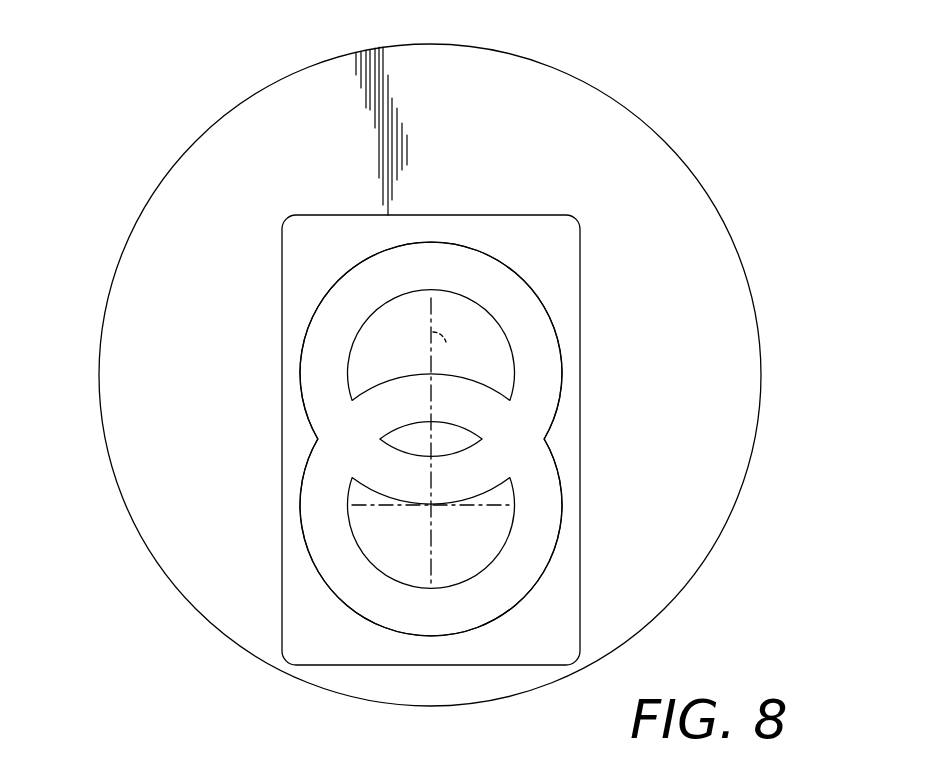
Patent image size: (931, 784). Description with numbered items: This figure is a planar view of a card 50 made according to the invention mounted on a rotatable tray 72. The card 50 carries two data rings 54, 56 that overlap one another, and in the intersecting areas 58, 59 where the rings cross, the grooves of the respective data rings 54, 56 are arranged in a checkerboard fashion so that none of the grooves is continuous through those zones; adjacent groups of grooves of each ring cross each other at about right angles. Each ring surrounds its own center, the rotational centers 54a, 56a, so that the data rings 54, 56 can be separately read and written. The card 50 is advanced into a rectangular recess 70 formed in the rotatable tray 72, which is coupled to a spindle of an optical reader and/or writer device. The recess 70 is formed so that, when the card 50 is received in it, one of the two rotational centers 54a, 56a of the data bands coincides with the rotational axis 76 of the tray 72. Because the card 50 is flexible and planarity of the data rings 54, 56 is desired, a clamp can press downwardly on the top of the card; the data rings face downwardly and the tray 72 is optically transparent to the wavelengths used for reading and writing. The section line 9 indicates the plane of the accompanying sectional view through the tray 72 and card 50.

The section line 9 is at (815, 373).
The rotatable tray 72 is at (541, 70).
The rectangular recess 70 is at (283, 223).
The card 50 is at (302, 272).
The data ring 54 is at (520, 302).
The data ring 56 is at (545, 514).
The rotational center of data ring 54a is at (431, 372).
The rotational center of data ring 56a is at (431, 505).
The intersecting area 58 is at (343, 437).
The intersecting area 59 is at (514, 441).
The rotational axis 76 is at (455, 345).